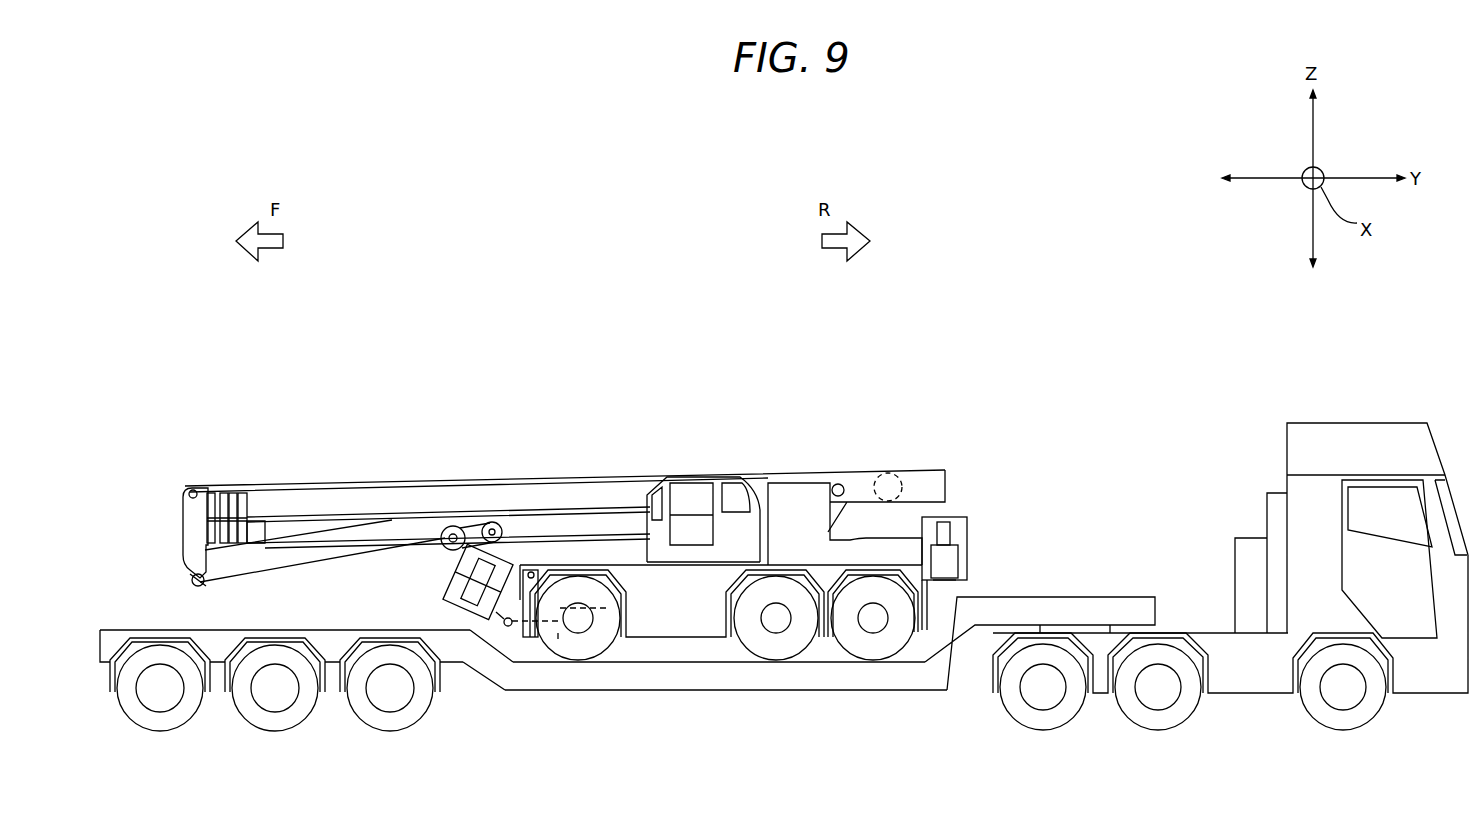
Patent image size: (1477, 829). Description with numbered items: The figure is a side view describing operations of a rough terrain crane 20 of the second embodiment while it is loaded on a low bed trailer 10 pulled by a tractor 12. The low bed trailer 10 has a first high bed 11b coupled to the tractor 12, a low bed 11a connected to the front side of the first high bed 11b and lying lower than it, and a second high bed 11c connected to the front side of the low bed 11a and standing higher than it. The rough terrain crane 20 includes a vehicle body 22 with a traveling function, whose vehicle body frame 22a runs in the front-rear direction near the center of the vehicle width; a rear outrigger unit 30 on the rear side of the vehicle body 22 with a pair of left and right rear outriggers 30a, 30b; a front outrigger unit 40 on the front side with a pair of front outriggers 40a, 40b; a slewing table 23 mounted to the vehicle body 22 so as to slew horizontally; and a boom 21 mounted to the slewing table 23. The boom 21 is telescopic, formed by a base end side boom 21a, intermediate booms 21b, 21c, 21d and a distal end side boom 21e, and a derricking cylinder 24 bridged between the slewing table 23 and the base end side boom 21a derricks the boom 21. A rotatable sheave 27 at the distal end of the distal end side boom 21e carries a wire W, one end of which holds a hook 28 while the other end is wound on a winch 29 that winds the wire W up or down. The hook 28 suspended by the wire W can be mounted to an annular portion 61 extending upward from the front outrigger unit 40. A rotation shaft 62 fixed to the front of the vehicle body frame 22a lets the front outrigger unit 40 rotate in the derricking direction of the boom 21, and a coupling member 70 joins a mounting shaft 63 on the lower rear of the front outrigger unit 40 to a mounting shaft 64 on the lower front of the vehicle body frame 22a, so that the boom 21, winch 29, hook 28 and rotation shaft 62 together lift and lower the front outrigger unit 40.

The low bed trailer 10 is at (1082, 505).
The low bed 11a is at (785, 672).
The first high bed 11b is at (1115, 612).
The second high bed 11c is at (328, 640).
The tractor 12 is at (1318, 405).
The rough terrain crane 20 is at (705, 460).
The boom 21 is at (422, 495).
The base end side boom 21a is at (348, 498).
The intermediate boom 21b is at (242, 494).
The intermediate boom 21c is at (228, 494).
The intermediate boom 21d is at (212, 494).
The distal end side boom 21e is at (200, 490).
The vehicle body 22 is at (672, 607).
The vehicle body frame 22a is at (620, 600).
The slewing table 23 is at (810, 502).
The derricking cylinder 24 is at (618, 547).
The sheave 27 is at (197, 587).
The hook 28 is at (497, 540).
The winch 29 is at (908, 476).
The rear outrigger unit 30 is at (972, 510).
The rear outrigger 30a is at (1006, 551).
The rear outrigger 30b is at (953, 557).
The front outrigger unit 40 is at (450, 577).
The front outrigger 40a is at (398, 585).
The front outrigger 40b is at (447, 598).
The annular portion 61 is at (530, 543).
The rotation shaft 62 is at (535, 570).
The mounting shaft 63 is at (503, 632).
The mounting shaft 64 is at (558, 640).
The coupling member 70 is at (516, 628).
The wire W is at (333, 562).